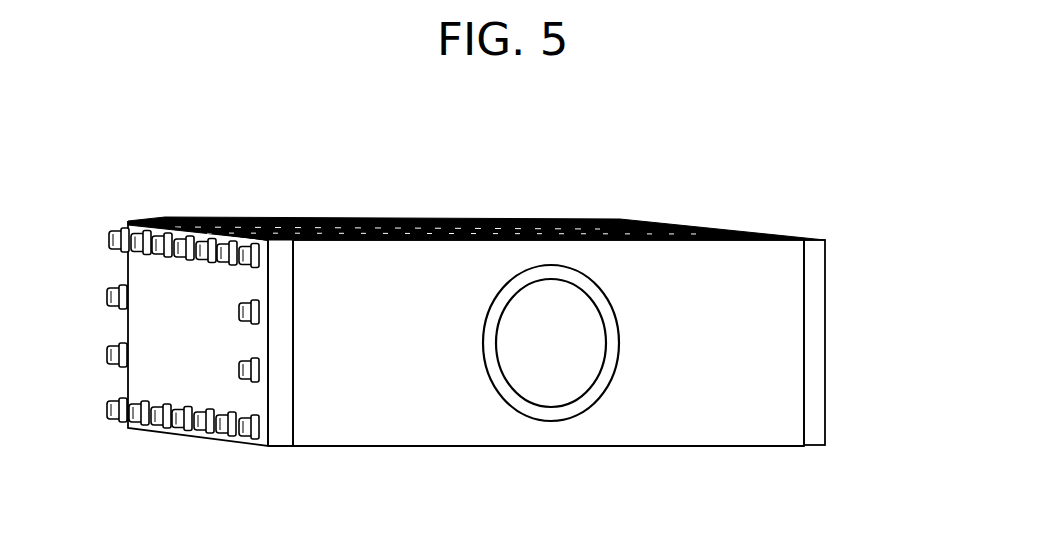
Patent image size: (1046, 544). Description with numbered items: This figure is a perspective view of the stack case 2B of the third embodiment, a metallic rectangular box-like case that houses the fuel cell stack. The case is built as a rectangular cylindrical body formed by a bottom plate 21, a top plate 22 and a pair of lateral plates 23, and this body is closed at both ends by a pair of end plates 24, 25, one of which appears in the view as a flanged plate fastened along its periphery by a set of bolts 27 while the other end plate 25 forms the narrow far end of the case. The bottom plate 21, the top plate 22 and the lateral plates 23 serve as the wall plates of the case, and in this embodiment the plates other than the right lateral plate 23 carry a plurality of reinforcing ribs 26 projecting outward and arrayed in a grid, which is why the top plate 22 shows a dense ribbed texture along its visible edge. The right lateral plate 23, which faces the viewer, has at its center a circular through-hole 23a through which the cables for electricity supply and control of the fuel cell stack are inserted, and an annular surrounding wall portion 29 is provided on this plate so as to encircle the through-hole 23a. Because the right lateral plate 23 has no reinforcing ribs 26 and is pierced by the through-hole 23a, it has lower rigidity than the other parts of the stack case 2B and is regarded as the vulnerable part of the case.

The stack case 2B is at (350, 218).
The bottom plate 21 is at (610, 447).
The top plate 22 is at (527, 220).
The lateral plate 23 is at (726, 360).
The through-hole 23a is at (500, 360).
The end plate 24 is at (207, 363).
The end plate 25 is at (812, 292).
The reinforcing ribs 26 is at (432, 220).
The bolts 27 is at (182, 425).
The surrounding wall portion 29 is at (570, 405).